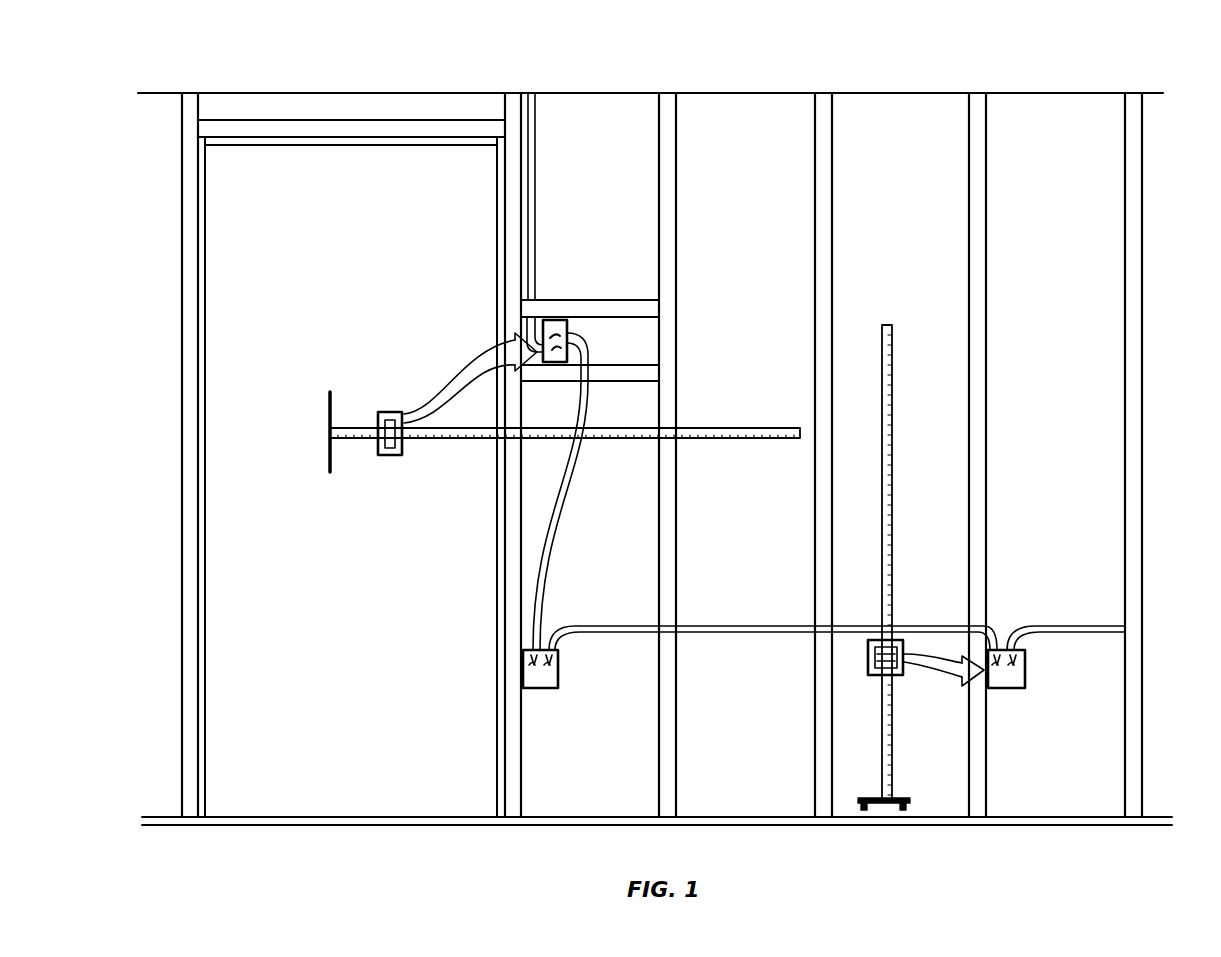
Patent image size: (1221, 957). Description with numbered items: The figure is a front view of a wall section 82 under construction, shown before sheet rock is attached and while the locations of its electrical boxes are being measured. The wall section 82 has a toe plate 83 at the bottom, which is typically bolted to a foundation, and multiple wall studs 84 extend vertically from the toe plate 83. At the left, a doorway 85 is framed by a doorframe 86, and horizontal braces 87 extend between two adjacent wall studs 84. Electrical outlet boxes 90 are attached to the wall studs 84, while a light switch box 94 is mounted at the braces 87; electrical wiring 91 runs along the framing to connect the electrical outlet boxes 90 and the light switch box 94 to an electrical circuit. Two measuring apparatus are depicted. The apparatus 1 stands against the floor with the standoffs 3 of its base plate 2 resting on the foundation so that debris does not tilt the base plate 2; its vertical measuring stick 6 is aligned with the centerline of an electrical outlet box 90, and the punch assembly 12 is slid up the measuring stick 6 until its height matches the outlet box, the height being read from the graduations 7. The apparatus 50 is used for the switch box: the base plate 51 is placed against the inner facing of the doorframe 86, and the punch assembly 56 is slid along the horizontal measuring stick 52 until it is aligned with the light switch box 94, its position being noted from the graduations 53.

The apparatus 1 is at (909, 566).
The base plate 2 is at (894, 815).
The standoffs 3 is at (915, 783).
The measuring stick 6 is at (893, 338).
The graduations 7 is at (893, 441).
The punch assembly 12 is at (873, 676).
The apparatus 50 is at (546, 417).
The base plate 51 is at (329, 400).
The measuring stick 52 is at (728, 428).
The graduations 53 is at (742, 438).
The punch assembly 56 is at (390, 413).
The wall section 82 is at (1145, 83).
The toe plate 83 is at (1038, 817).
The wall studs 84 is at (677, 160).
The doorway 85 is at (326, 176).
The doorframe 86 is at (258, 130).
The horizontal braces 87 is at (645, 312).
The electrical outlet boxes 90 is at (560, 681).
The electrical wiring 91 is at (535, 167).
The light switch boxes 94 is at (583, 320).